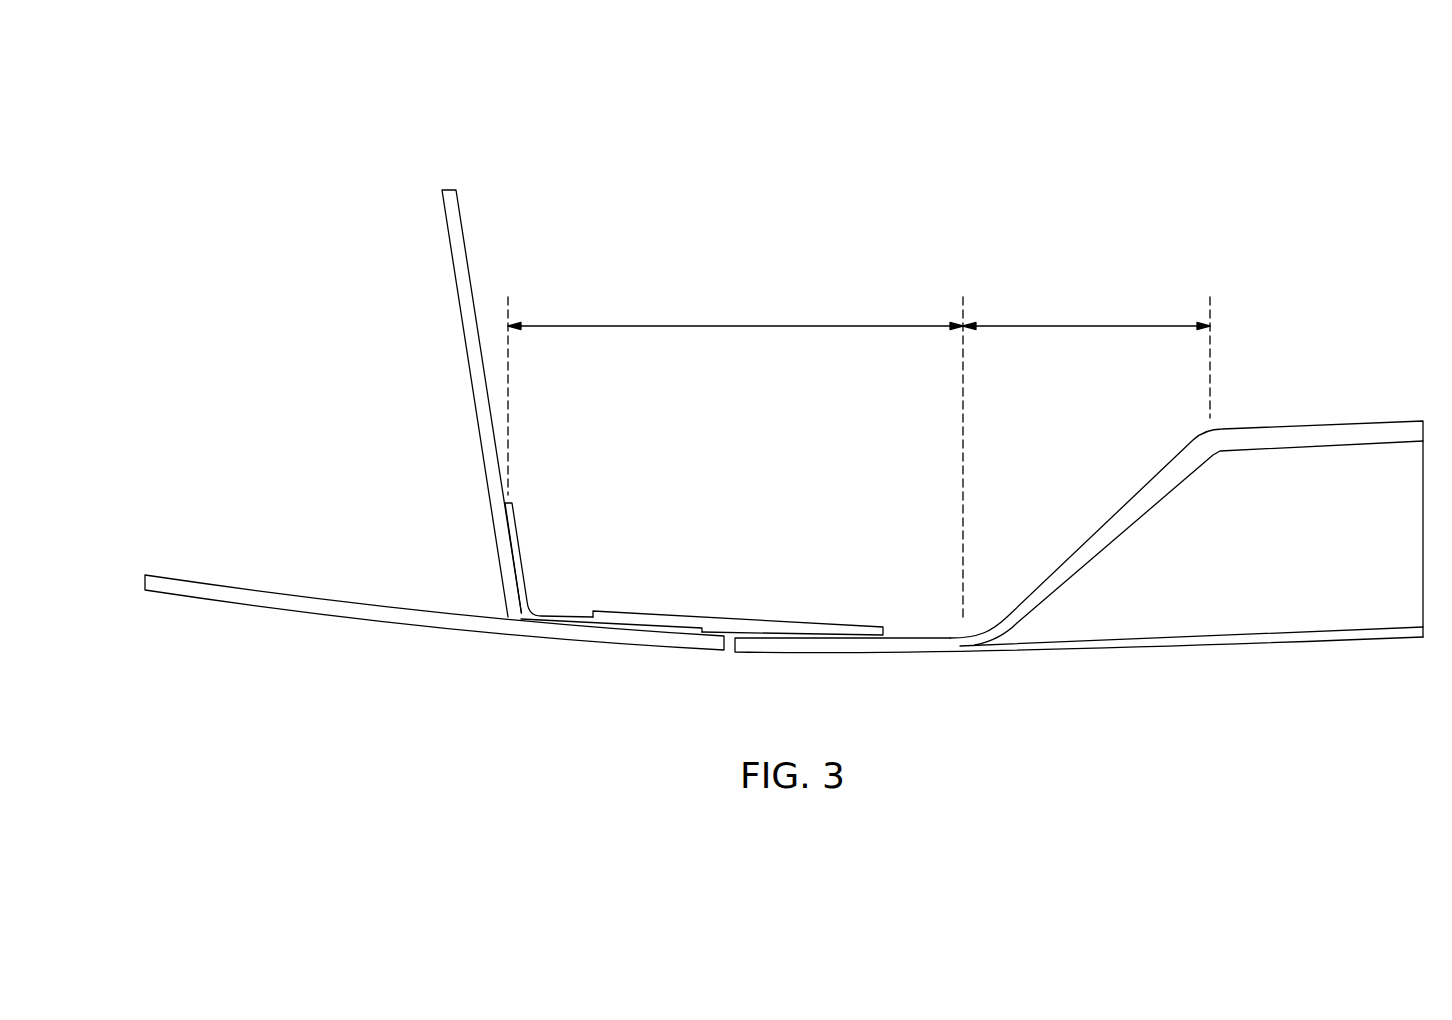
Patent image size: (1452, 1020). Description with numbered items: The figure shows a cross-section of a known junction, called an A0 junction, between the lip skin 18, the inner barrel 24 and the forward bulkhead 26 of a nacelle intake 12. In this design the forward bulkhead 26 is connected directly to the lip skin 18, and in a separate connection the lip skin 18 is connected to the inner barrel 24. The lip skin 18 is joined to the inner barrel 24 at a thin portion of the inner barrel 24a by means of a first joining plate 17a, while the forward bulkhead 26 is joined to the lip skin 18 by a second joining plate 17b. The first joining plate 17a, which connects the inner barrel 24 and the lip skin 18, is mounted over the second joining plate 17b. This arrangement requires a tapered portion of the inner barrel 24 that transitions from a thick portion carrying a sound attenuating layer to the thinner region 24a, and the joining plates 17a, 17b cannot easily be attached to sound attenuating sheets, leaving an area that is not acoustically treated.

The nacelle intake 12 is at (212, 156).
The lip skin 18 is at (343, 620).
The forward bulkhead 26 is at (464, 331).
The second joining plate 17b is at (512, 543).
The first joining plate 17a is at (720, 620).
The thin portion of the inner barrel 24a is at (852, 654).
The inner barrel 24 is at (1141, 664).